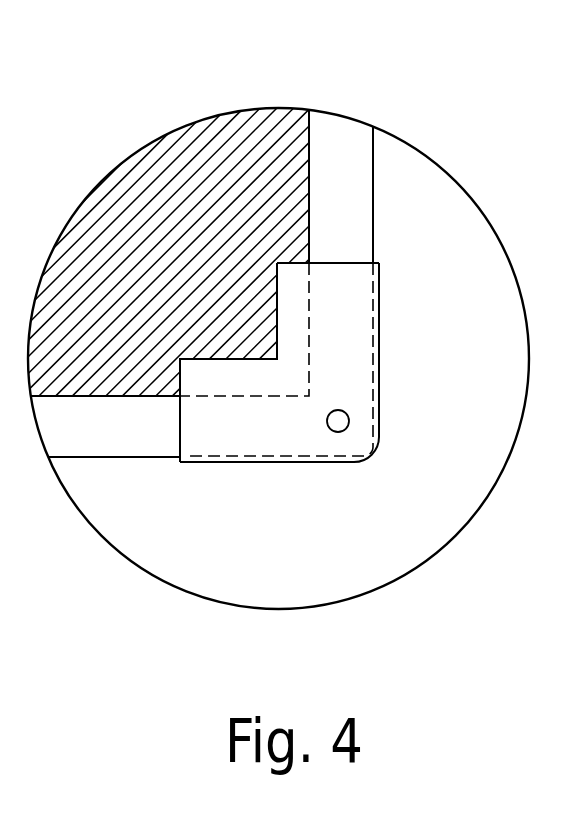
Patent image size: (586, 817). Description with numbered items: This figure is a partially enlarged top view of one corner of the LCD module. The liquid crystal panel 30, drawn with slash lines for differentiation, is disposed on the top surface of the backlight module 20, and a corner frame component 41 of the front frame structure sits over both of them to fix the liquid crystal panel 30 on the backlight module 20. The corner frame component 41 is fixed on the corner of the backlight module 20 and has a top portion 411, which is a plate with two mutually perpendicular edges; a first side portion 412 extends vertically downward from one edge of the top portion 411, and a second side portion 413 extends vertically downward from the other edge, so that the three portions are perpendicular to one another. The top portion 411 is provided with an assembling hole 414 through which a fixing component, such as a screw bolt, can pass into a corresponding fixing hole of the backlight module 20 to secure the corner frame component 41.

The liquid crystal panel 30 is at (300, 157).
The backlight module 20 is at (357, 198).
The corner frame component 41 is at (322, 414).
The top portion 411 is at (233, 437).
The first side portion 412 is at (279, 463).
The second side portion 413 is at (380, 382).
The assembling hole 414 is at (350, 421).